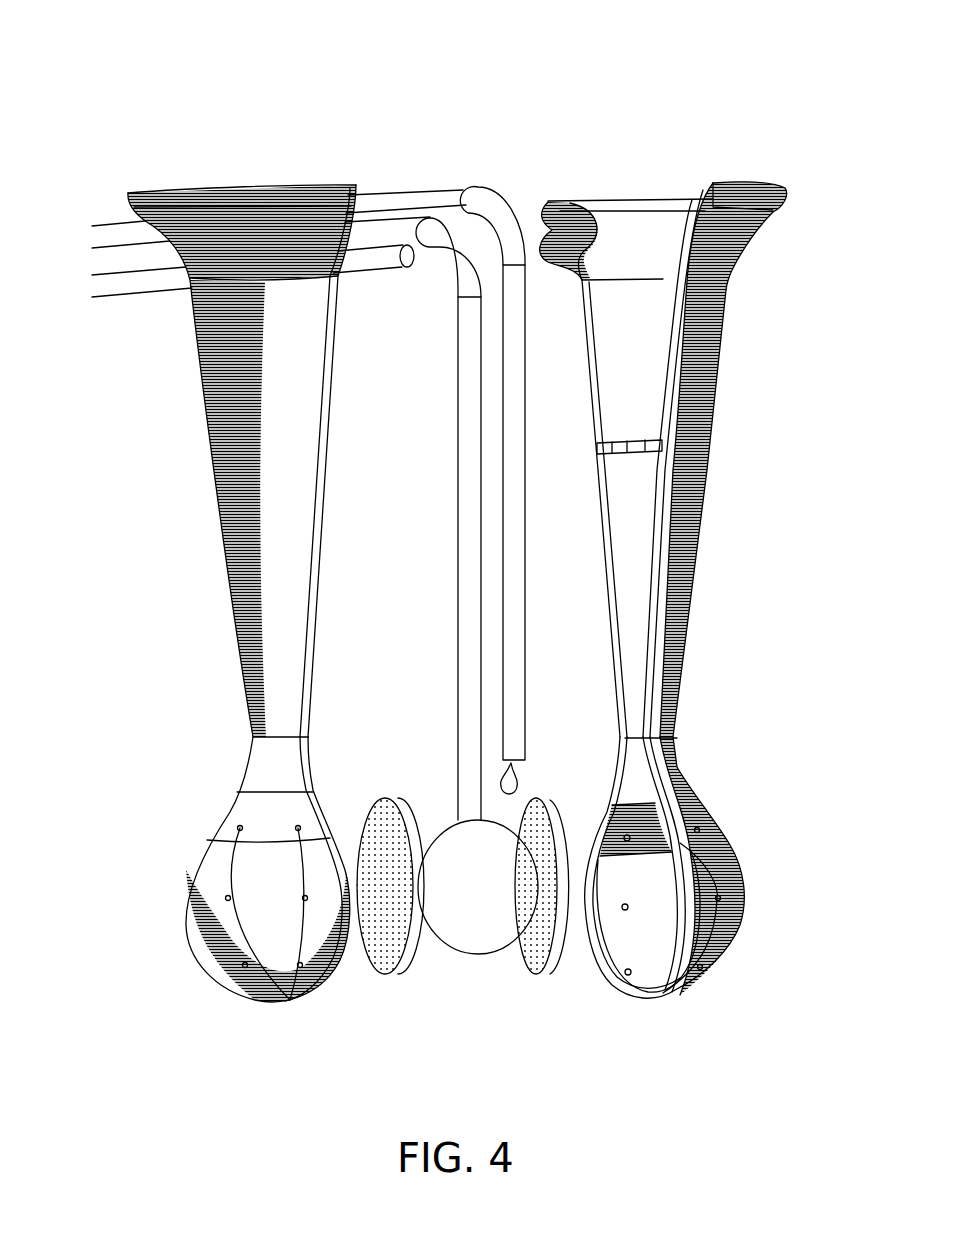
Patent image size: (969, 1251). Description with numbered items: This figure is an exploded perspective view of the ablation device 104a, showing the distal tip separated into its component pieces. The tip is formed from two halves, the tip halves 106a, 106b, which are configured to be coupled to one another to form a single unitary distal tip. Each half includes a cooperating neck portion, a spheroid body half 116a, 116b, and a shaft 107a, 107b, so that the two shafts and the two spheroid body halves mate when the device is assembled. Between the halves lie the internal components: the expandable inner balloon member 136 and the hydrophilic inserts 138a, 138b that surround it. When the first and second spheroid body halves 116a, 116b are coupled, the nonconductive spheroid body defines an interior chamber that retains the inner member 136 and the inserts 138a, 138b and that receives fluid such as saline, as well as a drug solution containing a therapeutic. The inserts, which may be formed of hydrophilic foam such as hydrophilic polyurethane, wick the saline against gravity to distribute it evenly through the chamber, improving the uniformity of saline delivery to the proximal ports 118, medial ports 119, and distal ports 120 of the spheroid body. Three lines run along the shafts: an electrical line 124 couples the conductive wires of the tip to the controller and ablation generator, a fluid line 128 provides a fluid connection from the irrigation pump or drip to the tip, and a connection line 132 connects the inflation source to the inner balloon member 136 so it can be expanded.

The ablation device 104a is at (218, 95).
The tip half 106a is at (138, 1022).
The tip half 106b is at (782, 985).
The shaft 107a is at (207, 418).
The shaft 107b is at (703, 487).
The spheroid body half 116a is at (188, 918).
The spheroid body half 116b is at (737, 933).
The proximal ports 118 is at (627, 838).
The medial ports 119 is at (625, 907).
The distal ports 120 is at (628, 972).
The electrical line 124 is at (372, 277).
The fluid line 128 is at (513, 625).
The connection line 132 is at (470, 635).
The expandable inner balloon member 136 is at (483, 925).
The hydrophilic insert 138a is at (377, 960).
The hydrophilic insert 138b is at (550, 970).